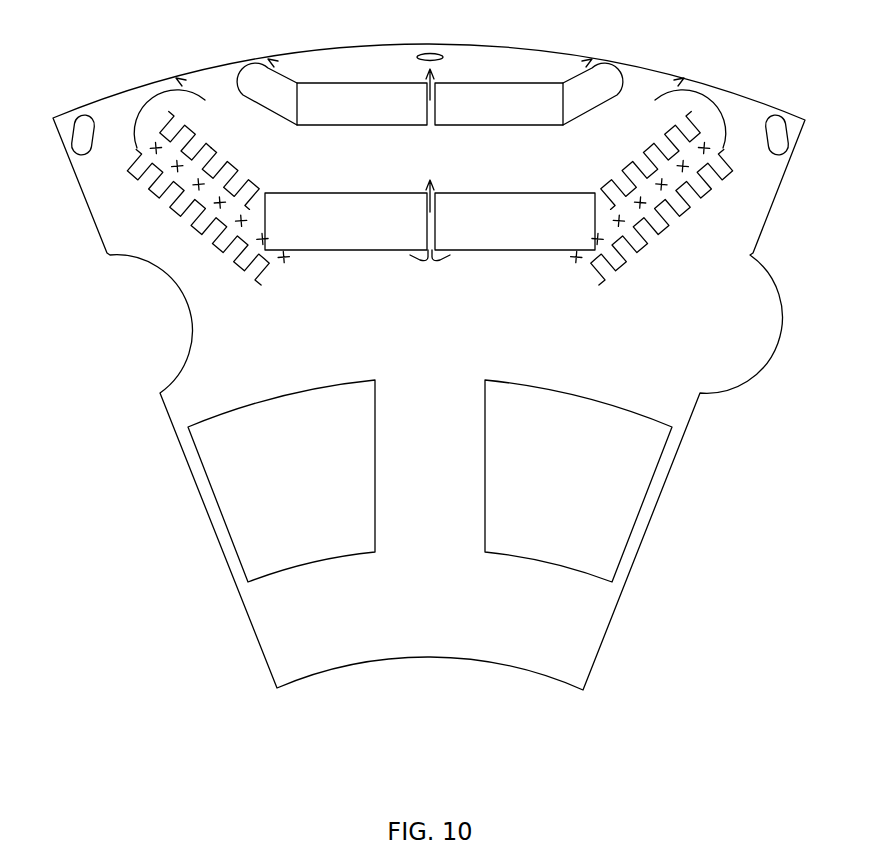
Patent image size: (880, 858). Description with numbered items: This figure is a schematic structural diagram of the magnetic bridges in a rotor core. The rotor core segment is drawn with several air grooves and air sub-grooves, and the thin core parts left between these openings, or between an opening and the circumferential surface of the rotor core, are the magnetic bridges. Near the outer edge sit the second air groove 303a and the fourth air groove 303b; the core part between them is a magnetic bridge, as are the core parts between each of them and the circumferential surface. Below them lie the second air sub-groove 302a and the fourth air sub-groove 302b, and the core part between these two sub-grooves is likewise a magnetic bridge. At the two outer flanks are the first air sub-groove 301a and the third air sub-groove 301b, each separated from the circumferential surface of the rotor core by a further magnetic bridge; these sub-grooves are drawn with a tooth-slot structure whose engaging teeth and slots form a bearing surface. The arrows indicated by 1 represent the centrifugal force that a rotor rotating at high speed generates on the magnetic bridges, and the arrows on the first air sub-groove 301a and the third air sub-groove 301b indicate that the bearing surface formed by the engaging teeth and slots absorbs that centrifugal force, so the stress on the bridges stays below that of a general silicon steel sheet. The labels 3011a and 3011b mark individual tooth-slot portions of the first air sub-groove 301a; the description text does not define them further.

The centrifugal force arrows 1 is at (432, 112).
The first air sub-groove 301a is at (236, 148).
The third air sub-groove 301b is at (648, 203).
The second air sub-groove 302a is at (325, 228).
The fourth air sub-groove 302b is at (488, 228).
The second air groove 303a is at (337, 113).
The fourth air groove 303b is at (475, 113).
The first clip element 3011a is at (192, 138).
The second clip element 3011b is at (207, 145).